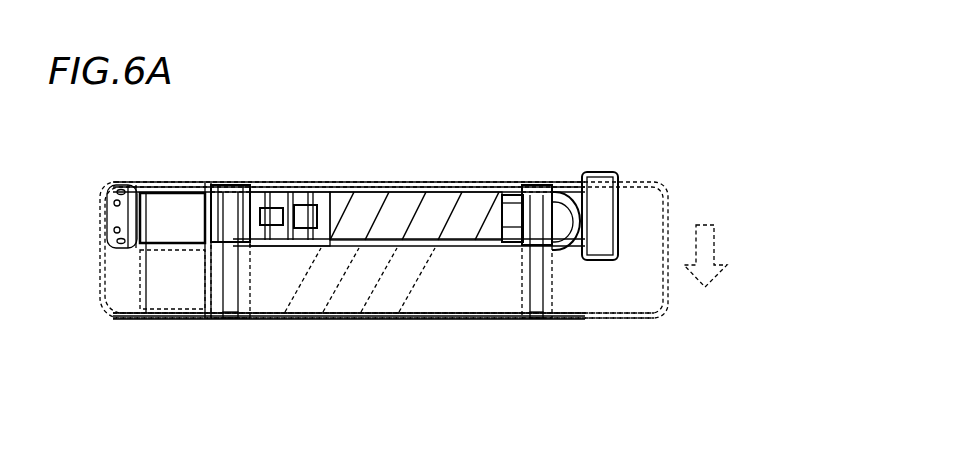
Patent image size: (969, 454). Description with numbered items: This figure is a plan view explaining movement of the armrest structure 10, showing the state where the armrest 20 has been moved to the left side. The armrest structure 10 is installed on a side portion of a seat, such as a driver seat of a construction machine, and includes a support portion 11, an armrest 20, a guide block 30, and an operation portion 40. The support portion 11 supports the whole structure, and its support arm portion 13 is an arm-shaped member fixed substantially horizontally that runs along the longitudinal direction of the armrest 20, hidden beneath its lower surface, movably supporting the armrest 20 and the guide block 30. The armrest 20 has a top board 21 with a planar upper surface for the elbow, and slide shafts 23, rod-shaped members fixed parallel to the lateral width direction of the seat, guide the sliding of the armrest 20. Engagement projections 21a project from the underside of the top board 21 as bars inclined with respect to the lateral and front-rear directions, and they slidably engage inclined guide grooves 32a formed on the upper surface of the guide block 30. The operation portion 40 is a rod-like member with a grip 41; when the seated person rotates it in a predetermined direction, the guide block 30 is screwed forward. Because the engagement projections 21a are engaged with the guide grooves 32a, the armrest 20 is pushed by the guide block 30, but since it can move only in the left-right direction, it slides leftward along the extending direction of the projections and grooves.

The armrest structure 10 is at (685, 188).
The support portion 11 is at (493, 252).
The support arm portion 13 is at (463, 250).
The armrest 20 is at (667, 313).
The top board 21 is at (613, 322).
The engagement projections 21a is at (330, 322).
The slide shafts 23 is at (250, 320).
The guide block 30 is at (487, 181).
The guide grooves 32a is at (363, 181).
The operation portion 40 is at (622, 168).
The grip 41 is at (620, 203).